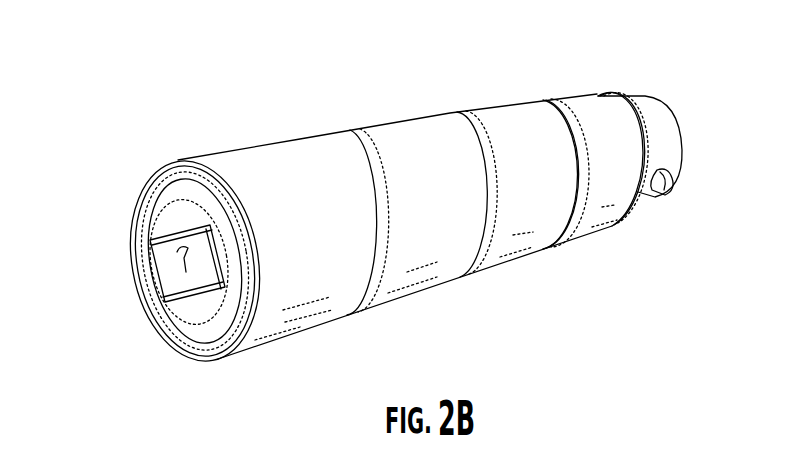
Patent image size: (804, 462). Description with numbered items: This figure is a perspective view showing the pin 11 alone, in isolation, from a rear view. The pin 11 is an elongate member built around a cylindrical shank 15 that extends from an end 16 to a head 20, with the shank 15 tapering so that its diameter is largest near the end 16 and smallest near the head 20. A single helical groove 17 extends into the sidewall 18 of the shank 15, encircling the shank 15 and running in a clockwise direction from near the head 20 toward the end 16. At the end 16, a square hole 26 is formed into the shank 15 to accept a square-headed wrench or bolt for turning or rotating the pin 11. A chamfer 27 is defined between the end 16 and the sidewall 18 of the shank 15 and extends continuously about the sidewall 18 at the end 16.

The pin 11 is at (376, 193).
The shank 15 is at (295, 137).
The end 16 is at (152, 183).
The helical groove 17 is at (360, 128).
The sidewall 18 is at (332, 260).
The head 20 is at (635, 98).
The square hole 26 is at (143, 263).
The chamfer 27 is at (174, 168).